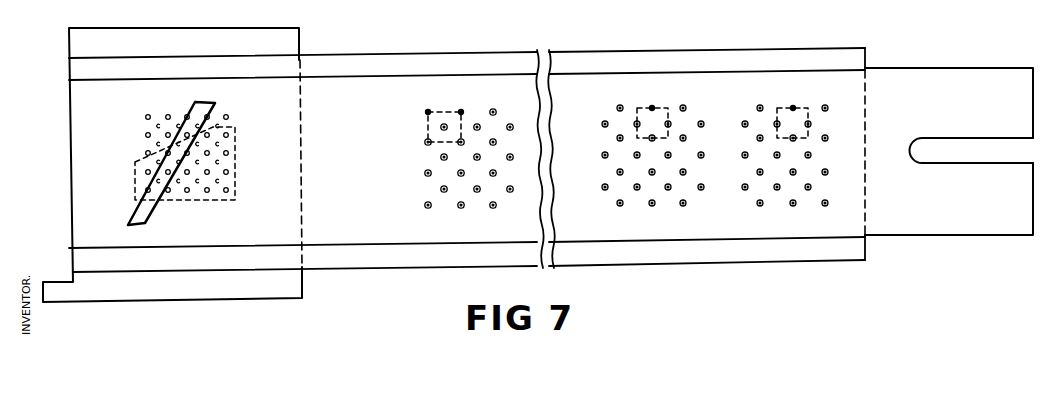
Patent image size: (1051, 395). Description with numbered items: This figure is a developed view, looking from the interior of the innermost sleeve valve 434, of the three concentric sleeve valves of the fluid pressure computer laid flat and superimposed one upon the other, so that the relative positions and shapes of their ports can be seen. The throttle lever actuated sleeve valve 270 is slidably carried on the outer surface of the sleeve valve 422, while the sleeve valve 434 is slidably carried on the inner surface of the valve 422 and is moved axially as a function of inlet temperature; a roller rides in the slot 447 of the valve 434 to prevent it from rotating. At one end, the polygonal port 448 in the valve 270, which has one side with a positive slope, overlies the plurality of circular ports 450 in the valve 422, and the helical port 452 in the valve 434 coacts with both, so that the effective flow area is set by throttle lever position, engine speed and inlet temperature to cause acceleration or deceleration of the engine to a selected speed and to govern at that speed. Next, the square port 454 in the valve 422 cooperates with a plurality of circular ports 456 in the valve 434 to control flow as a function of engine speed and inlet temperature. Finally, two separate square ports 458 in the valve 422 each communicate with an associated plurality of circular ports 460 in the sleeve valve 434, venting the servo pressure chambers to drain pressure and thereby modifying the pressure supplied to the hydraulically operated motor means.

The throttle lever actuated sleeve valve 270 is at (293, 41).
The sleeve valve 422 is at (742, 62).
The sleeve valve 434 is at (947, 80).
The slot 447 is at (980, 138).
The port 448 is at (238, 142).
The circular ports 450 is at (203, 133).
The helical port 452 is at (150, 215).
The square port 454 is at (447, 110).
The circular ports 456 is at (425, 171).
The square ports 458 is at (785, 104).
The circular ports 460 is at (828, 170).